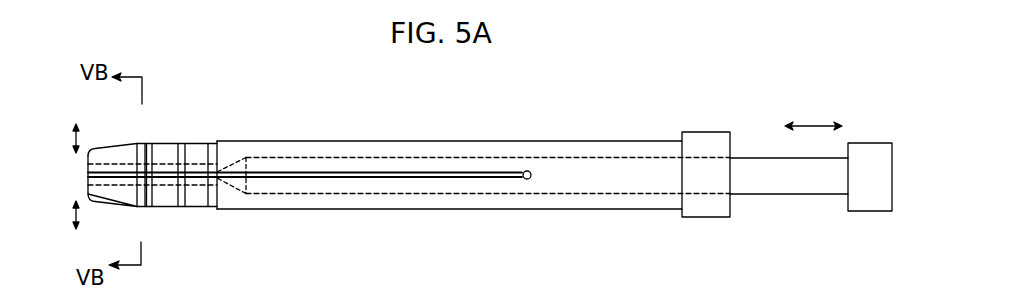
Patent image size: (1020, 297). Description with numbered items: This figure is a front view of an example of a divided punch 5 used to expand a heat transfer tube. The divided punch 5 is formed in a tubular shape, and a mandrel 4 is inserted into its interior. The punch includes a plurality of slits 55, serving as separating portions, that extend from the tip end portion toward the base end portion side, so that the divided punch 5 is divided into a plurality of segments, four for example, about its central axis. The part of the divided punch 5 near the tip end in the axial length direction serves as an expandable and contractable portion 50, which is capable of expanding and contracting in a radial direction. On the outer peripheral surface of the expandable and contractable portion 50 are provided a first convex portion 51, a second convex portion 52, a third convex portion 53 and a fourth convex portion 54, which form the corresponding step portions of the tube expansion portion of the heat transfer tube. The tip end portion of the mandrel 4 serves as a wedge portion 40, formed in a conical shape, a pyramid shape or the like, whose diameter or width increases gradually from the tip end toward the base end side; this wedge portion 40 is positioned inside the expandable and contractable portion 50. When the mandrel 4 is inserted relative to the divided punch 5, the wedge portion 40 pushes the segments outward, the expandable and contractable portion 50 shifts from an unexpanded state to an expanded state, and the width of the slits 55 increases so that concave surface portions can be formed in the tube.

The mandrel 4 is at (763, 167).
The divided punch 5 is at (340, 140).
The wedge portion 40 is at (238, 186).
The expandable and contractable portion 50 is at (108, 138).
The first convex portion 51 is at (135, 145).
The second convex portion 52 is at (148, 145).
The third convex portion 53 is at (180, 145).
The fourth convex portion 54 is at (213, 145).
The slit 55 is at (274, 178).